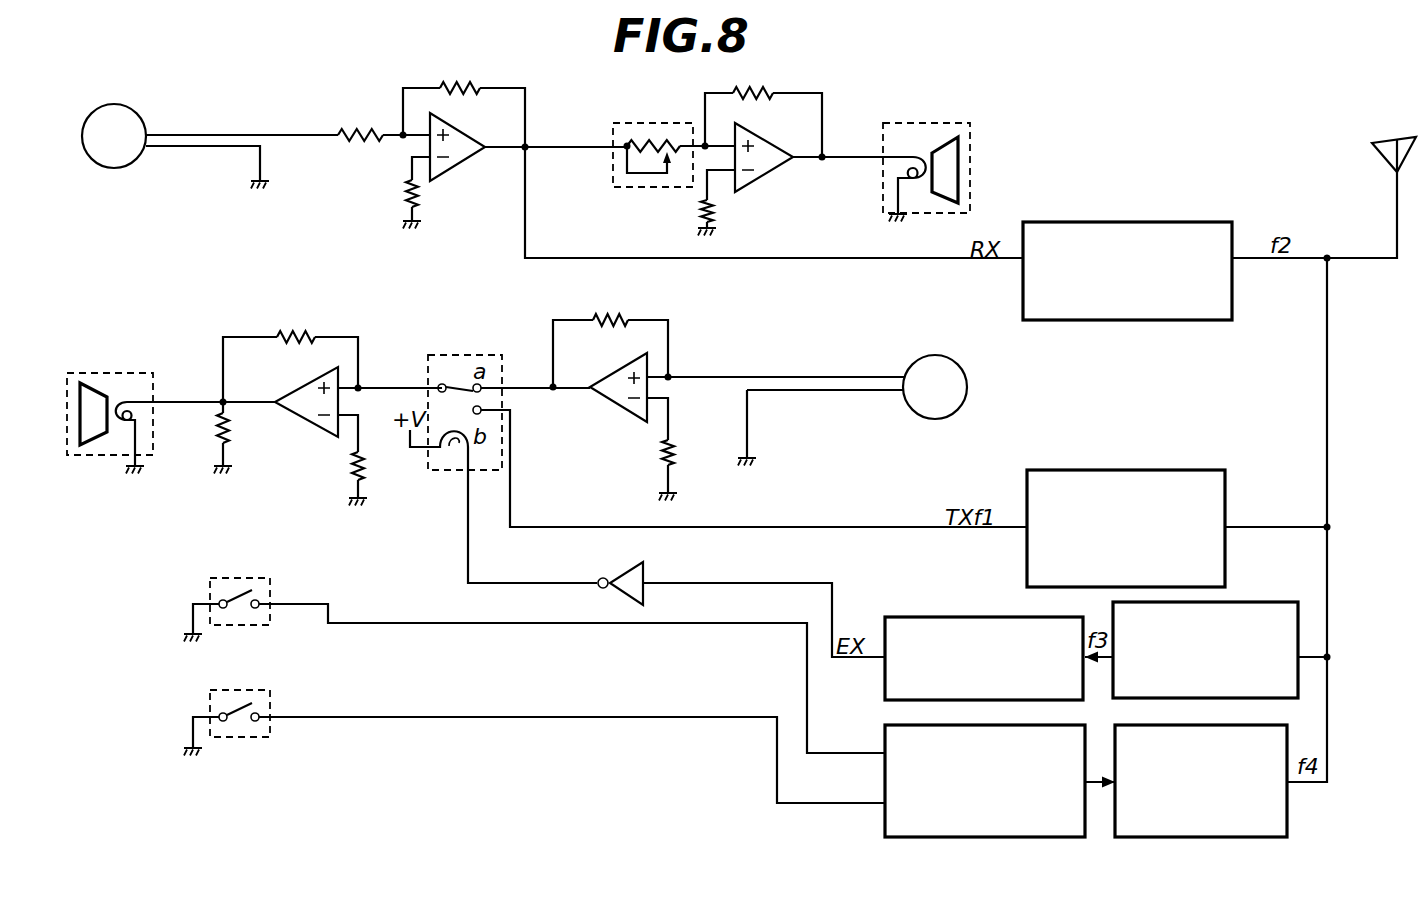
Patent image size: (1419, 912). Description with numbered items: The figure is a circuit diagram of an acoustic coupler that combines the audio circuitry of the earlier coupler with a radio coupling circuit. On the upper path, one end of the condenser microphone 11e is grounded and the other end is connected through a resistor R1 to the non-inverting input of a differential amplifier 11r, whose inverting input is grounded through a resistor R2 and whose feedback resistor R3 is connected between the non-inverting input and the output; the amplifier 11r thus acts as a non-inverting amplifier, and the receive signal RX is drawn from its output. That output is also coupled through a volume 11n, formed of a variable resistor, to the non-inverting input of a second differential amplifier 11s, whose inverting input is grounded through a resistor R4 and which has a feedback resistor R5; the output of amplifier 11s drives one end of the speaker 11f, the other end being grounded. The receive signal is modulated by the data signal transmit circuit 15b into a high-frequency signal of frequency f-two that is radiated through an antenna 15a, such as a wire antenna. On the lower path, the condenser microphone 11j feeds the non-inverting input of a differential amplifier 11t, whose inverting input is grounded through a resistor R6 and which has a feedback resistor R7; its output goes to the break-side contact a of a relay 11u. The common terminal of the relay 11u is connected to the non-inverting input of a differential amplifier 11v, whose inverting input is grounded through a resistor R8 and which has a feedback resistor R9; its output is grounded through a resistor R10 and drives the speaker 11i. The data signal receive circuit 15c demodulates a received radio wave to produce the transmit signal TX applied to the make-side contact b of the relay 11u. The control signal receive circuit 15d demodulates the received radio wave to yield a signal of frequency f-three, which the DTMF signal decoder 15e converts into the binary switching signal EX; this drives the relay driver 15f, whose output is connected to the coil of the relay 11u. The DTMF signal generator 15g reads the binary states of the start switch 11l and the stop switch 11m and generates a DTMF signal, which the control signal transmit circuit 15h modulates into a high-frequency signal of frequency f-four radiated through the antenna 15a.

The condenser microphone 11e is at (132, 108).
The resistor R1 is at (360, 119).
The resistor R2 is at (397, 193).
The resistor R3 is at (464, 101).
The differential amplifier 11r is at (455, 167).
The volume 11n is at (663, 122).
The resistor R4 is at (696, 203).
The resistor R5 is at (763, 109).
The differential amplifier 11s is at (772, 170).
The speaker 11f is at (938, 122).
The data signal transmit circuit 15b is at (1095, 221).
The antenna 15a is at (1385, 140).
The speaker 11i is at (123, 372).
The resistor R9 is at (290, 354).
The resistor R10 is at (197, 438).
The differential amplifier 11v is at (307, 423).
The resistor R8 is at (367, 460).
The relay 11u is at (465, 352).
The resistor R7 is at (610, 337).
The differential amplifier 11t is at (610, 403).
The resistor R6 is at (676, 449).
The condenser microphone 11j is at (938, 355).
The data signal receive circuit 15c is at (1072, 469).
The control signal receive circuit 15d is at (1237, 601).
The DTMF signal decoder 15e is at (997, 615).
The relay driver 15f is at (645, 568).
The DTMF signal generator 15g is at (913, 725).
The control signal transmit circuit 15h is at (1277, 725).
The start switch 11l is at (253, 575).
The stop switch 11m is at (232, 690).